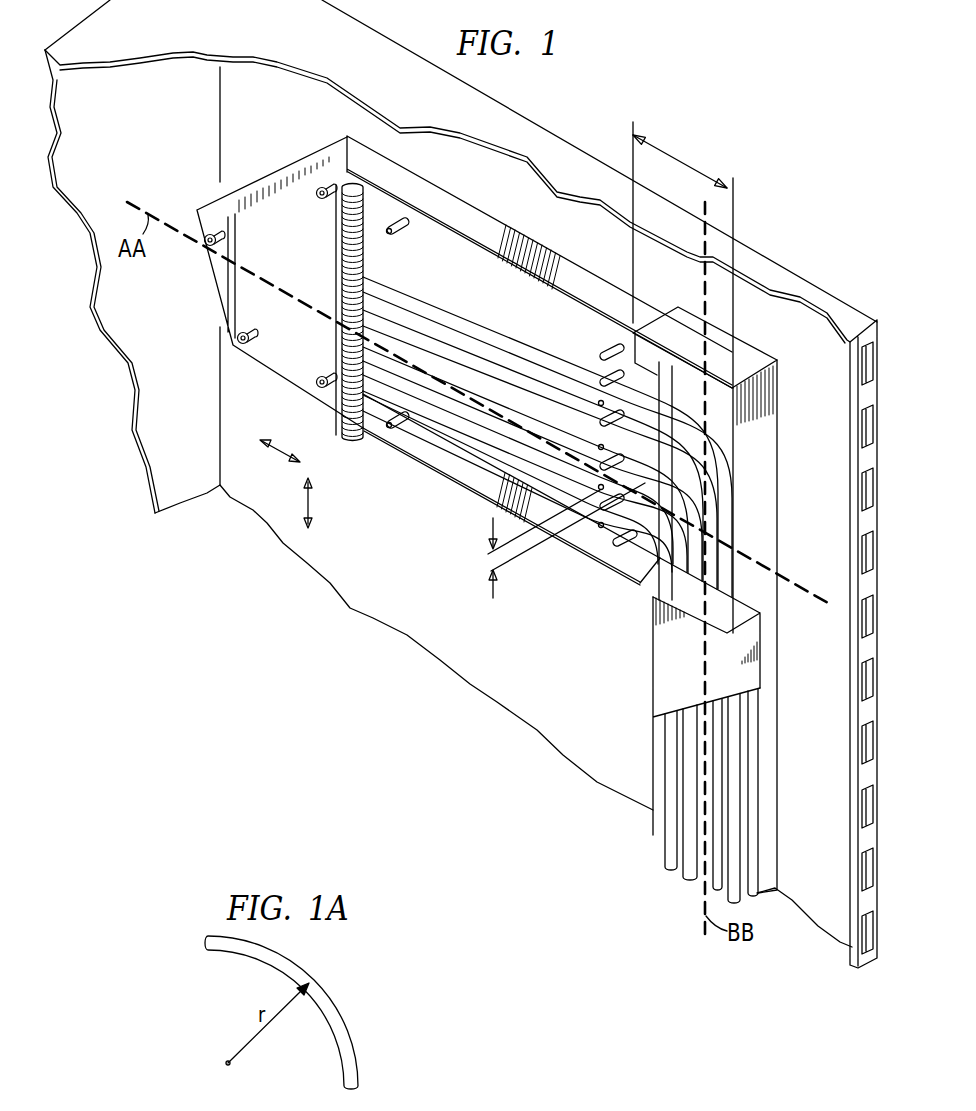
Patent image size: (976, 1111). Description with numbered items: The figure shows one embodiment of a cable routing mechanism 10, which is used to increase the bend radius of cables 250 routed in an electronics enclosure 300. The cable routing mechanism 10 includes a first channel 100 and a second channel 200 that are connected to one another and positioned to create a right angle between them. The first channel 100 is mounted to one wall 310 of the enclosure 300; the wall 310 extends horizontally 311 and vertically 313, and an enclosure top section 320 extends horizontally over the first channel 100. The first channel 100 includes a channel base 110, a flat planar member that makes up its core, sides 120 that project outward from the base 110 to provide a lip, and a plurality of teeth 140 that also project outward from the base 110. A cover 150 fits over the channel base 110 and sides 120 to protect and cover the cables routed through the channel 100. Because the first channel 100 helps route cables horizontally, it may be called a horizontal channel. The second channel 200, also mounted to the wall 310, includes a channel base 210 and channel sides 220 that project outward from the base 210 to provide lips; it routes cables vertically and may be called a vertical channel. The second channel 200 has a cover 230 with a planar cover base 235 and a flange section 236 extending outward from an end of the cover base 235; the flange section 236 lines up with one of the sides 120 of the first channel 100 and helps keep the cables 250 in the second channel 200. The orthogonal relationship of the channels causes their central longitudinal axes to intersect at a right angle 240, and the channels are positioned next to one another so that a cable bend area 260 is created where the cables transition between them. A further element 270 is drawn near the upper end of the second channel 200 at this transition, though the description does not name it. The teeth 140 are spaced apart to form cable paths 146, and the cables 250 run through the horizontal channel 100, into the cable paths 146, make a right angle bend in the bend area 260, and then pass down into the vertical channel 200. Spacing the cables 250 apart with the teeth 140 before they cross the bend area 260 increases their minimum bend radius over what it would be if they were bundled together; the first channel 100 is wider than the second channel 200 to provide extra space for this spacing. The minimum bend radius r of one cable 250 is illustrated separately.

In FIG. 1, the cable routing mechanism 10 is at (605, 72).
In FIG. 1, the first channel 100 is at (460, 494).
In FIG. 1, the channel base 110 is at (460, 251).
In FIG. 1, the sides 120 is at (578, 264).
In FIG. 1, the teeth 140 is at (605, 377).
In FIG. 1, the cable paths 146 is at (488, 560).
In FIG. 1, the cover 150 is at (218, 272).
In FIG. 1, the second channel 200 is at (641, 772).
In FIG. 1, the channel base 210 is at (752, 828).
In FIG. 1, the channel sides 220 is at (754, 360).
In FIG. 1, the cover 230 is at (643, 656).
In FIG. 1, the cover base 235 is at (667, 695).
In FIG. 1, the flange section 236 is at (648, 588).
In FIG. 1, the right angle 240 is at (745, 545).
In FIG. 1, the cables 250 is at (405, 325).
In FIG. 1A, the cables 250 is at (338, 991).
In FIG. 1, the cable bend area 260 is at (686, 162).
In FIG. 1, the top cover plate 270 is at (670, 375).
In FIG. 1, the electronics enclosure 300 is at (135, 489).
In FIG. 1, the wall 310 is at (330, 578).
In FIG. 1, the horizontal direction 311 is at (280, 455).
In FIG. 1, the vertical direction 313 is at (314, 509).
In FIG. 1, the enclosure top section 320 is at (385, 46).